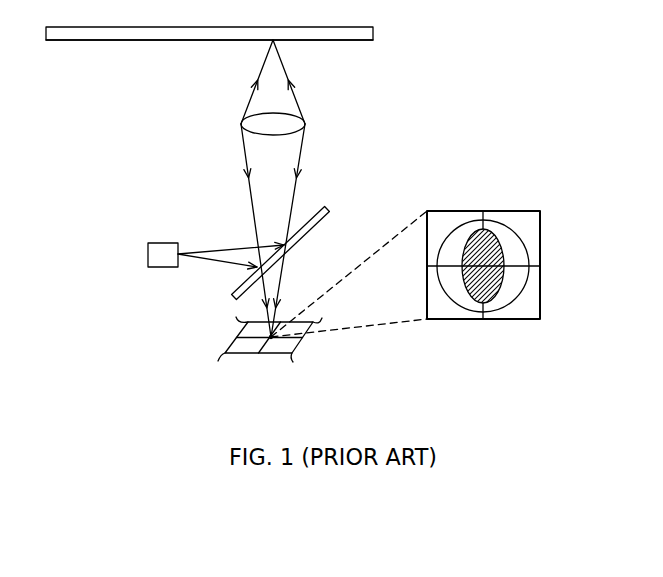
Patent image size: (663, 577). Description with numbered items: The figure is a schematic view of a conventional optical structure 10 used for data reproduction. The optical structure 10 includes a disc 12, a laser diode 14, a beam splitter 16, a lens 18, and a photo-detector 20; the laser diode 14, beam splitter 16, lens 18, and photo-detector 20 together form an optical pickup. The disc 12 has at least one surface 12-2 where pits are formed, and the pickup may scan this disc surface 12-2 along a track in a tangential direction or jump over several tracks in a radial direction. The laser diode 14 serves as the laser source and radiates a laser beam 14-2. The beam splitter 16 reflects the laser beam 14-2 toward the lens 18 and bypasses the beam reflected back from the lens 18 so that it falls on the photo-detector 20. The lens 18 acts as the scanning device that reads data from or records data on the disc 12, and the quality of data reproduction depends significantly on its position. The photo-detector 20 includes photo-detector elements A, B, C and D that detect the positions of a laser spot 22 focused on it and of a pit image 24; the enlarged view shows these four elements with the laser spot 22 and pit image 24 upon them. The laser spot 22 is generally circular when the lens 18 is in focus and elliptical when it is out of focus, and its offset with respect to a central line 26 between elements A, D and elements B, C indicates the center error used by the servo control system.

The optical structure 10 is at (472, 58).
The disc 12 is at (318, 28).
The disc surface 12-2 is at (356, 42).
The laser diode 14 is at (160, 267).
The laser beam 14-2 is at (217, 266).
The beam splitter 16 is at (327, 222).
The lens 18 is at (306, 119).
The photo-detector 20 is at (216, 342).
The laser spot 22 is at (491, 312).
The pit image 24 is at (484, 229).
The central line 26 is at (268, 353).